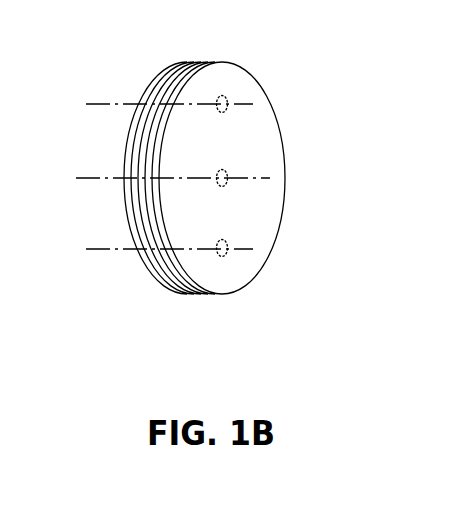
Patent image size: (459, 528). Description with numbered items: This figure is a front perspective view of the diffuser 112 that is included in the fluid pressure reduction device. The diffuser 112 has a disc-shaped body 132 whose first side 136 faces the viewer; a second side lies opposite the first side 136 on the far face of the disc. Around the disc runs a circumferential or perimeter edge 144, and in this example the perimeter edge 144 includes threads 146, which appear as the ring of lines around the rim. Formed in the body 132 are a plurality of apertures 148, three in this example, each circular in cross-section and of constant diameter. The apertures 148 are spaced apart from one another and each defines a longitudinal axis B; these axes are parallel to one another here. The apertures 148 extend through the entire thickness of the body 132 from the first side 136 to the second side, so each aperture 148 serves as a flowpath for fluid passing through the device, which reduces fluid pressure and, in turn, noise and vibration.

The diffuser 112 is at (219, 182).
The disc-shaped body 132 is at (280, 114).
The first side 136 is at (210, 153).
The perimeter edge 144 is at (186, 64).
The threads 146 is at (161, 153).
The apertures 148 is at (218, 93).